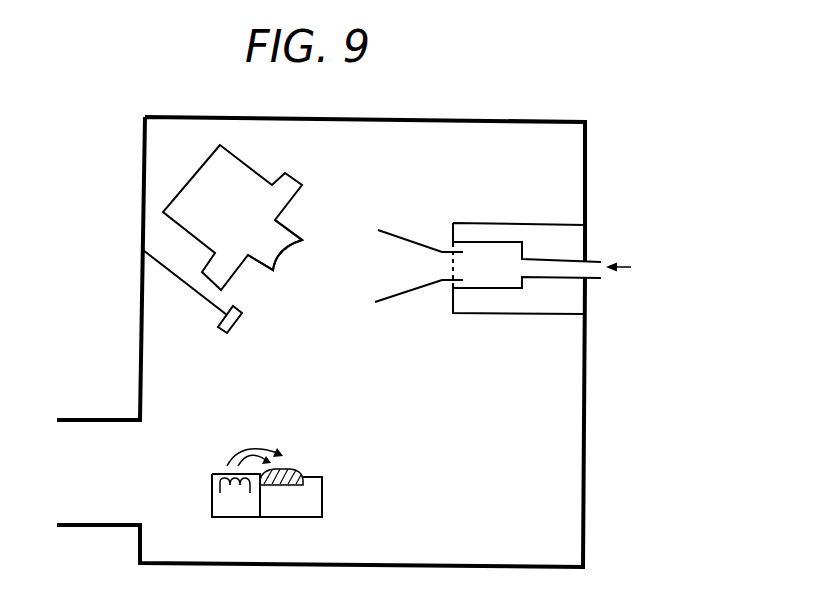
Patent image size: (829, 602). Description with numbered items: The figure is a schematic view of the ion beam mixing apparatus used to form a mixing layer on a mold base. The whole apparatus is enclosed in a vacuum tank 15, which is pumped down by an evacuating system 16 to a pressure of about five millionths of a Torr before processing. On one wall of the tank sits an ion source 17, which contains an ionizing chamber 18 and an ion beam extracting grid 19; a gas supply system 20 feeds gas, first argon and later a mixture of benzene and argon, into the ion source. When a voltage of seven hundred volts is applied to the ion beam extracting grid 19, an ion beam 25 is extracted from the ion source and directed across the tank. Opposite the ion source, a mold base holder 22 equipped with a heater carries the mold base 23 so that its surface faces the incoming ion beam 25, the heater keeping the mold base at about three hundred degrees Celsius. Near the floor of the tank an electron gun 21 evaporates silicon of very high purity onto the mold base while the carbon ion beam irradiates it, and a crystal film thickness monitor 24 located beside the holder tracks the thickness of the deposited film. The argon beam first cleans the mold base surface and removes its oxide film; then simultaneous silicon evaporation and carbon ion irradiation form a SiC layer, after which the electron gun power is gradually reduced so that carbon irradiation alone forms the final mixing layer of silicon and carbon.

The vacuum tank 15 is at (407, 118).
The evacuating system 16 is at (98, 493).
The ion source 17 is at (518, 315).
The ionizing chamber 18 is at (490, 253).
The ion beam extracting grid 19 is at (440, 265).
The gas supply system 20 is at (636, 268).
The electron gun 21 is at (322, 493).
The mold base holder 22 is at (255, 172).
The mold base 23 is at (282, 226).
The crystal film thickness monitor 24 is at (215, 333).
The ion beam 25 is at (387, 265).